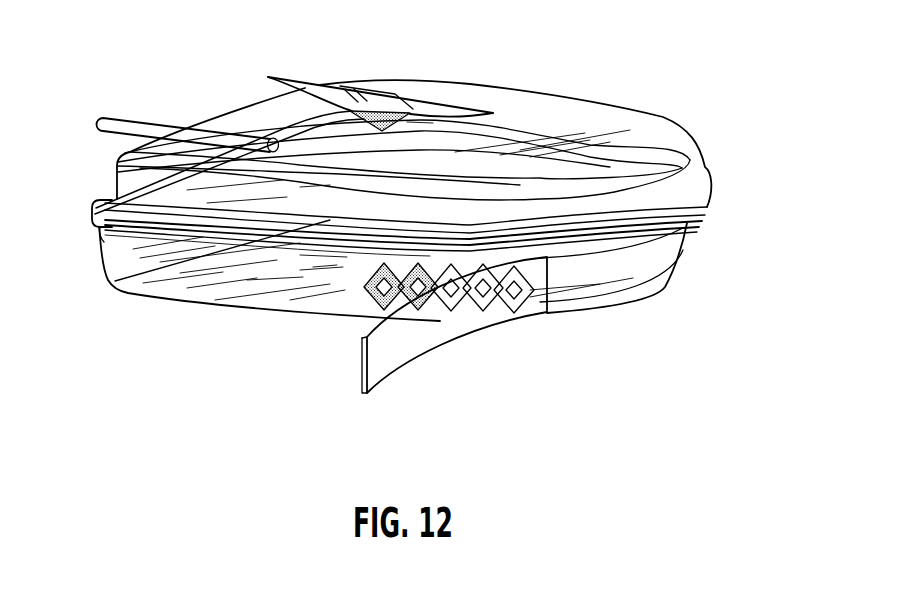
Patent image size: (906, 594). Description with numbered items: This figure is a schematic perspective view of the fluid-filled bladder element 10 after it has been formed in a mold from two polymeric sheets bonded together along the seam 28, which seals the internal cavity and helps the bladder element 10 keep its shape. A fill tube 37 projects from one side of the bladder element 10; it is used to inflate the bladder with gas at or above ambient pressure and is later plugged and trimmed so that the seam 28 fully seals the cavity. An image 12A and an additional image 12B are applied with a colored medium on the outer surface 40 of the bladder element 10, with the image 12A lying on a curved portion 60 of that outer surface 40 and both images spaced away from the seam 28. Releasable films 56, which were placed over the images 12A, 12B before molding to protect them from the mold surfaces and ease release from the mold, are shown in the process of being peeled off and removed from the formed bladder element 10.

The fluid-filled bladder element 10 is at (662, 58).
The image 12A is at (367, 318).
The image 12B is at (383, 132).
The seam 28 is at (107, 228).
The fill tube 37 is at (125, 117).
The outer surface 40 is at (572, 311).
The releasable film 56 is at (318, 75).
The curved portion 60 is at (547, 322).